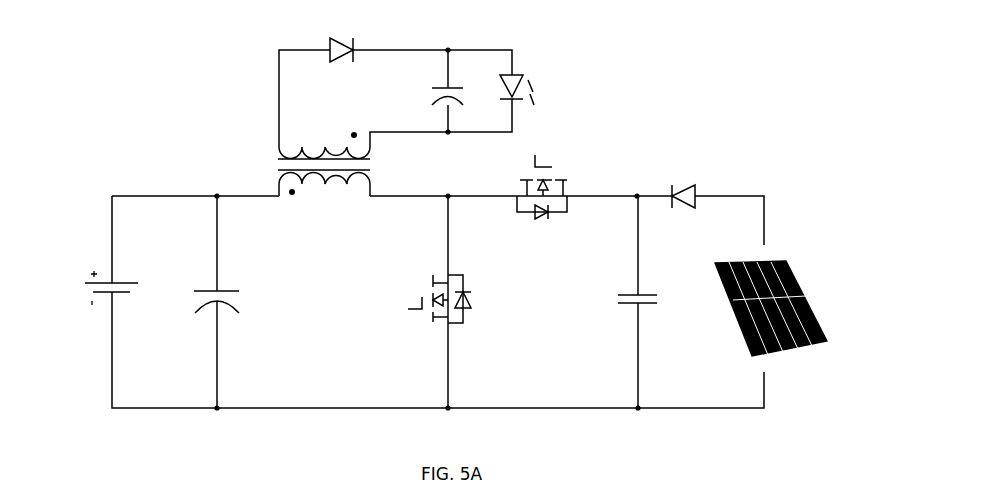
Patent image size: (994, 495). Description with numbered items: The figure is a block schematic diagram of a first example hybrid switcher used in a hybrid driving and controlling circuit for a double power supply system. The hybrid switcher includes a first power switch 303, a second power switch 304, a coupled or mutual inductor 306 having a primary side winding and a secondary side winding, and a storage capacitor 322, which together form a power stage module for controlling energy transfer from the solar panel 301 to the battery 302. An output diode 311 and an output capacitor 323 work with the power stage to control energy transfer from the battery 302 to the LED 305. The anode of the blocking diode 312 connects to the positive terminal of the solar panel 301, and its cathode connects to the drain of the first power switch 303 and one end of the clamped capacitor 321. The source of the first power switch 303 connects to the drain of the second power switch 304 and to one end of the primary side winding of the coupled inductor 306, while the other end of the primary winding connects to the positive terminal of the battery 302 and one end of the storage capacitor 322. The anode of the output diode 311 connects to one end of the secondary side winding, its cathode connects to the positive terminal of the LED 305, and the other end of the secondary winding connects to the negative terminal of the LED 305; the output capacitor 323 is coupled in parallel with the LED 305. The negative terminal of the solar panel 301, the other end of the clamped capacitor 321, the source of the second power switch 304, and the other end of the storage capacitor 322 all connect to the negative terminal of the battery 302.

The solar panel 301 is at (812, 316).
The battery 302 is at (92, 272).
The first power switch 303 is at (563, 179).
The second power switch 304 is at (472, 302).
The LED 305 is at (536, 92).
The coupled inductor 306 is at (278, 170).
The output diode 311 is at (330, 46).
The blocking diode 312 is at (695, 185).
The clamped capacitor 321 is at (655, 305).
The storage capacitor 322 is at (240, 303).
The output capacitor 323 is at (432, 88).